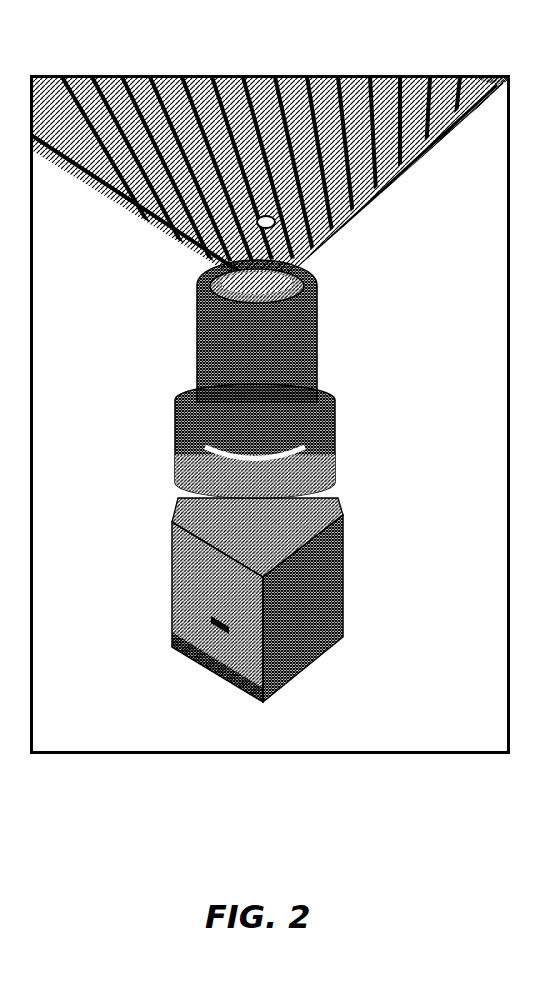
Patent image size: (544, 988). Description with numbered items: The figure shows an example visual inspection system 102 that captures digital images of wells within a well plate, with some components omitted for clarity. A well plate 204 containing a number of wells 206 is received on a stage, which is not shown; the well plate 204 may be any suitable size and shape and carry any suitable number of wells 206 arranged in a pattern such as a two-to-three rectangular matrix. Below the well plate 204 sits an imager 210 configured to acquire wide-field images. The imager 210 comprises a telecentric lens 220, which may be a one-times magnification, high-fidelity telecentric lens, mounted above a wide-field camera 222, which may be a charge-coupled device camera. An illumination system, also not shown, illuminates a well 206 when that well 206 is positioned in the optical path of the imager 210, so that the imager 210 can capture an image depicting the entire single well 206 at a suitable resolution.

The visual inspection system 102 is at (279, 32).
The well plate 204 is at (377, 203).
The wells 206 is at (268, 223).
The imager 210 is at (385, 414).
The telecentric lens 220 is at (197, 343).
The wide-field camera 222 is at (175, 585).